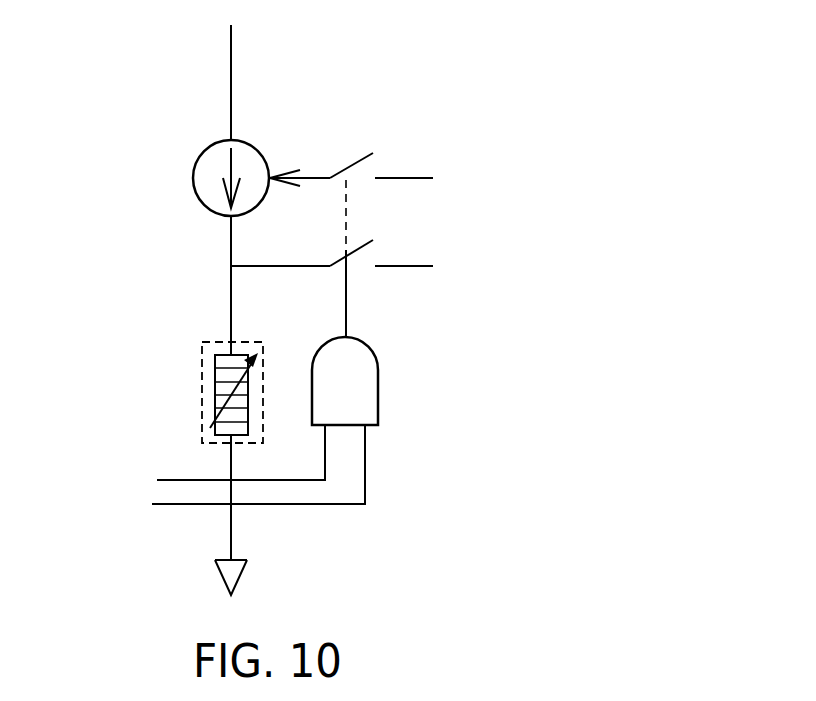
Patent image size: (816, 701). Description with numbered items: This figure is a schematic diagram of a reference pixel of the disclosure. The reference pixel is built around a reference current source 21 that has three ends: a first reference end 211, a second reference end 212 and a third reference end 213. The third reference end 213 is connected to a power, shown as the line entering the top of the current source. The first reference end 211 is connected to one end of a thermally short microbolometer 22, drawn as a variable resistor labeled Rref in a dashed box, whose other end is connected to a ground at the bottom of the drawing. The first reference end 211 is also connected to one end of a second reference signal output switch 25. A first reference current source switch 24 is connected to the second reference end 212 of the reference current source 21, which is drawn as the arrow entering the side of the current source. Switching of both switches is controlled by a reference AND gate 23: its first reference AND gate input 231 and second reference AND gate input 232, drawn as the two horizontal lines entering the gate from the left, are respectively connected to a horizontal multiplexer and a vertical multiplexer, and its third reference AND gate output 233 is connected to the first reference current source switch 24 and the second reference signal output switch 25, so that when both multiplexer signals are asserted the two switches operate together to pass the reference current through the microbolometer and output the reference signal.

The reference current source 21 is at (208, 140).
The first reference end 211 is at (231, 239).
The second reference end 212 is at (283, 172).
The third reference end 213 is at (231, 41).
The thermally short microbolometer 22 is at (202, 358).
The reference AND gate 23 is at (380, 397).
The first reference AND gate input 231 is at (168, 481).
The second reference AND gate input 232 is at (168, 508).
The third reference AND gate output 233 is at (346, 310).
The first reference current source switch 24 is at (373, 168).
The second reference signal output switch 25 is at (367, 258).